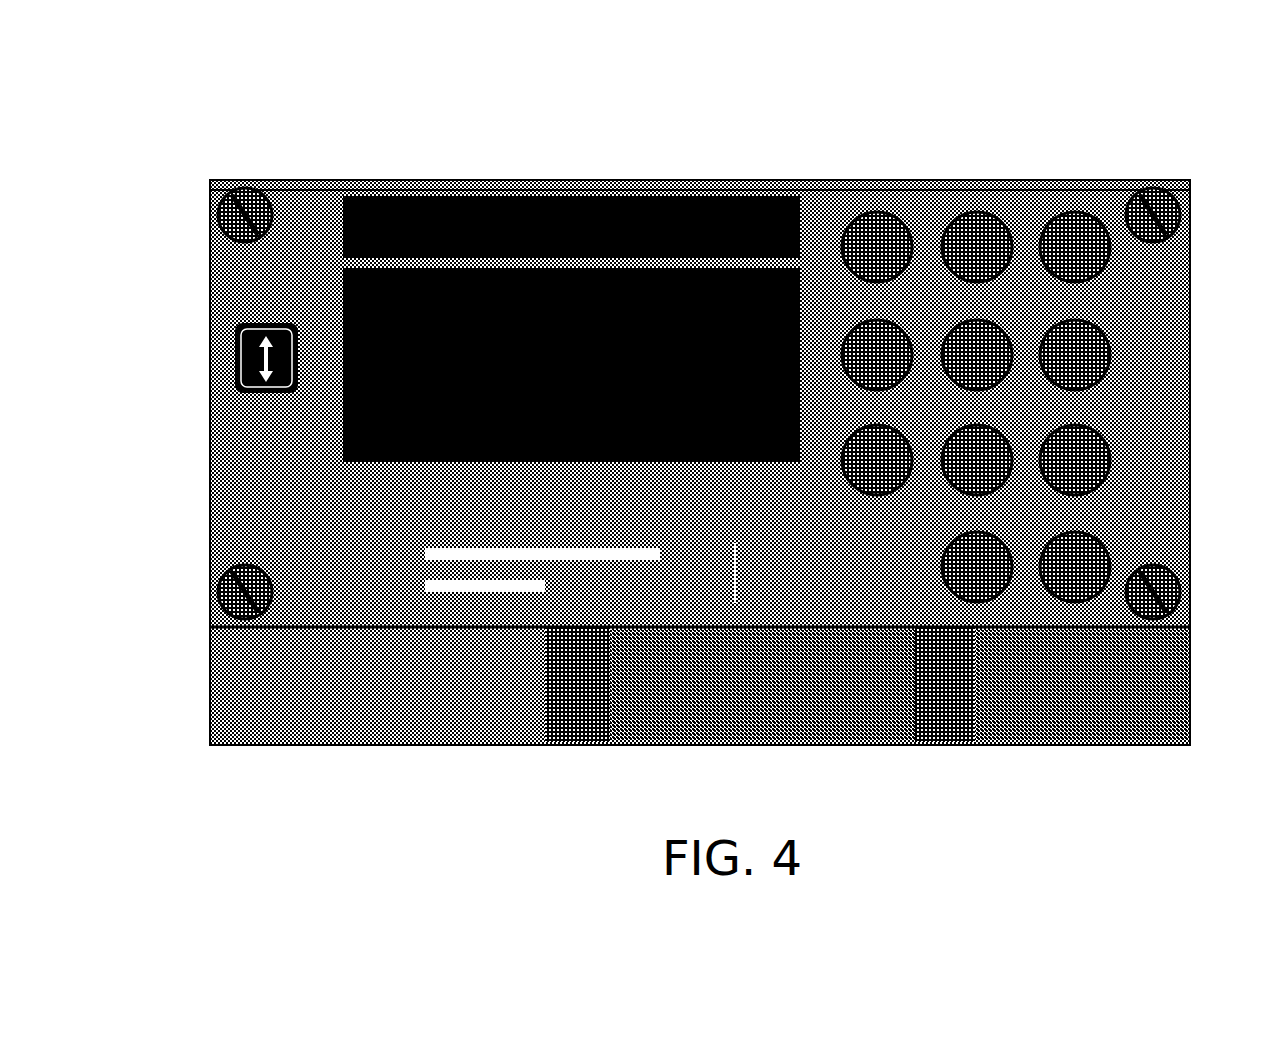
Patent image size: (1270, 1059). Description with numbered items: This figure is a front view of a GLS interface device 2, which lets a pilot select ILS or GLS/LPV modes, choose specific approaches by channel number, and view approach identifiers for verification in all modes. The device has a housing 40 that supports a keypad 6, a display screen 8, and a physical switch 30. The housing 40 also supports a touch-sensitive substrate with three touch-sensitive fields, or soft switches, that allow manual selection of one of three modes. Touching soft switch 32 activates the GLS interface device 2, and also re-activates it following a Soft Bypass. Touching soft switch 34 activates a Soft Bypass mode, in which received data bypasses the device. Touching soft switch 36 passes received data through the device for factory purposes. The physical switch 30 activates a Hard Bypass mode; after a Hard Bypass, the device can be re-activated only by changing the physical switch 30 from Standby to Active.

The GLS interface device 2 is at (857, 176).
The keypad 6 is at (1104, 338).
The display screen 8 is at (336, 422).
The physical switch 30 is at (224, 368).
The soft switch 32 is at (680, 745).
The soft switch 34 is at (1190, 712).
The soft switch 36 is at (210, 710).
The housing 40 is at (1045, 407).